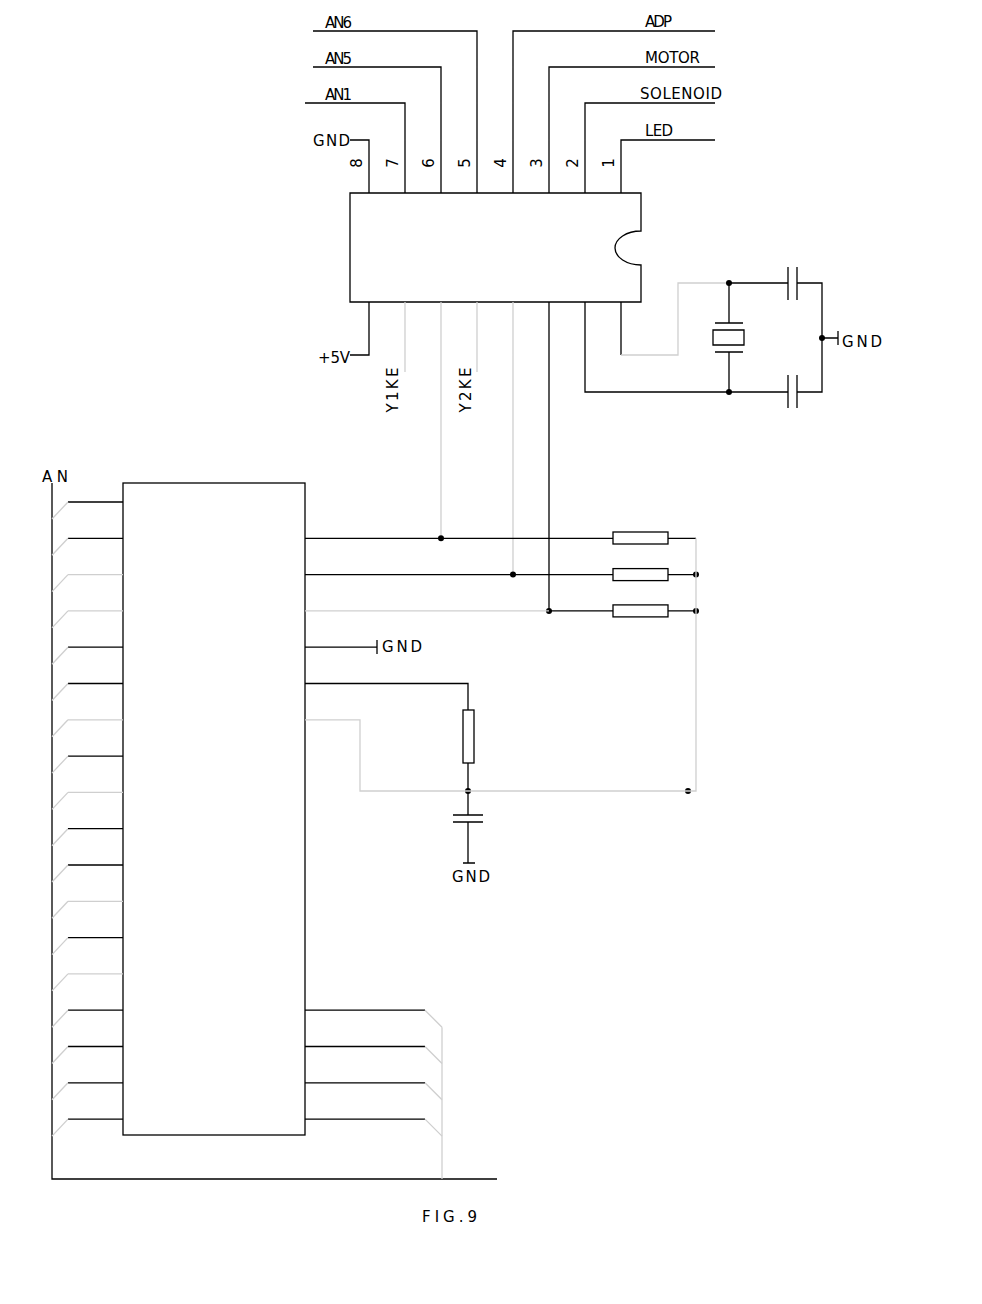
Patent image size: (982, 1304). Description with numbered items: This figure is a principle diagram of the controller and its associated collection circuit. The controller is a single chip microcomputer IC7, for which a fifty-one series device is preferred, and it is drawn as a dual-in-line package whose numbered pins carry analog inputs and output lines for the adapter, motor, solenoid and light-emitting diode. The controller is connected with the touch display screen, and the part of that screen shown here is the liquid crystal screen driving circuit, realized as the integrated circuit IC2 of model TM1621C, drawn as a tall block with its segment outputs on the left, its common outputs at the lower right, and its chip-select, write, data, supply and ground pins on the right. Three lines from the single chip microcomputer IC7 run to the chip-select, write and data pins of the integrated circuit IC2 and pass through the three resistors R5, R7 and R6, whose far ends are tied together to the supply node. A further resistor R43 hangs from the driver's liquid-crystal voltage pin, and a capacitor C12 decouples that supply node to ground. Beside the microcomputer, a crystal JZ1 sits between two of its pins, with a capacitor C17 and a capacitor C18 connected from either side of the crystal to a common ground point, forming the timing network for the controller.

The single chip microcomputer IC7 is at (495, 247).
The integrated circuit IC2 is at (211, 808).
The crystal oscillator JZ1 is at (741, 337).
The capacitor 22P C17 is at (798, 287).
The capacitor 22P C18 is at (798, 397).
The resistor 150K R5 is at (650, 528).
The resistor 150K R7 is at (646, 566).
The resistor 150K R6 is at (650, 603).
The resistor 1K R43 is at (487, 723).
The capacitor 105 C12 is at (485, 826).